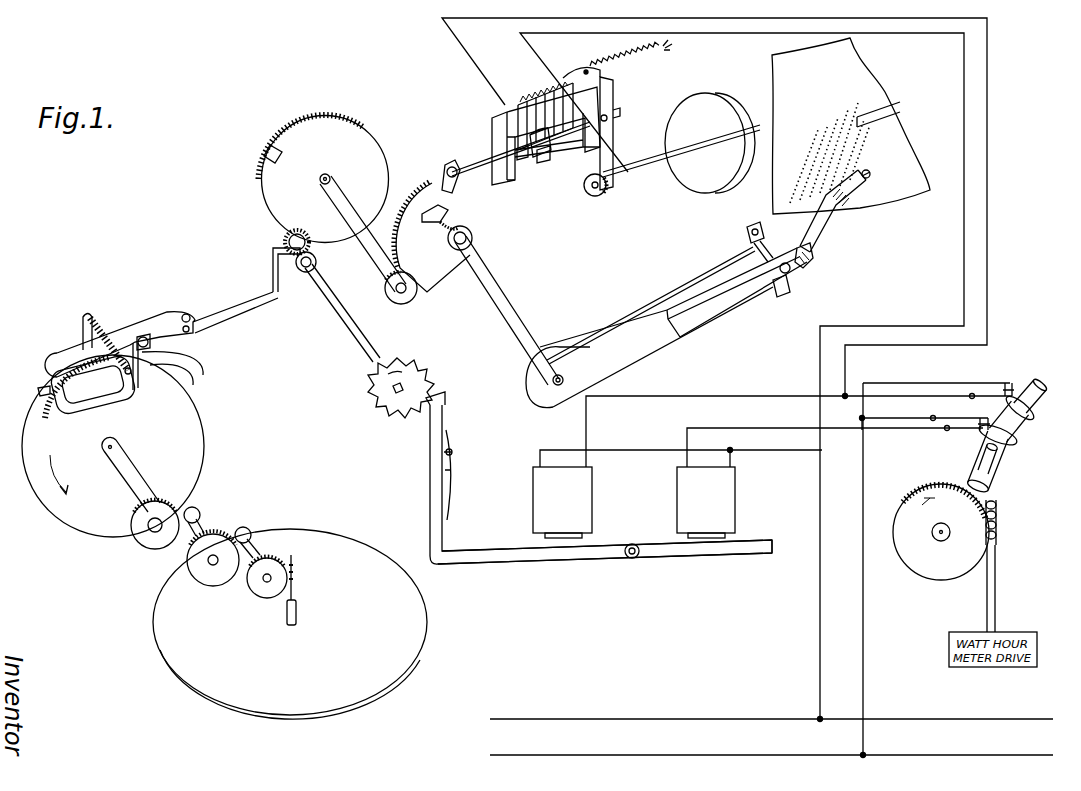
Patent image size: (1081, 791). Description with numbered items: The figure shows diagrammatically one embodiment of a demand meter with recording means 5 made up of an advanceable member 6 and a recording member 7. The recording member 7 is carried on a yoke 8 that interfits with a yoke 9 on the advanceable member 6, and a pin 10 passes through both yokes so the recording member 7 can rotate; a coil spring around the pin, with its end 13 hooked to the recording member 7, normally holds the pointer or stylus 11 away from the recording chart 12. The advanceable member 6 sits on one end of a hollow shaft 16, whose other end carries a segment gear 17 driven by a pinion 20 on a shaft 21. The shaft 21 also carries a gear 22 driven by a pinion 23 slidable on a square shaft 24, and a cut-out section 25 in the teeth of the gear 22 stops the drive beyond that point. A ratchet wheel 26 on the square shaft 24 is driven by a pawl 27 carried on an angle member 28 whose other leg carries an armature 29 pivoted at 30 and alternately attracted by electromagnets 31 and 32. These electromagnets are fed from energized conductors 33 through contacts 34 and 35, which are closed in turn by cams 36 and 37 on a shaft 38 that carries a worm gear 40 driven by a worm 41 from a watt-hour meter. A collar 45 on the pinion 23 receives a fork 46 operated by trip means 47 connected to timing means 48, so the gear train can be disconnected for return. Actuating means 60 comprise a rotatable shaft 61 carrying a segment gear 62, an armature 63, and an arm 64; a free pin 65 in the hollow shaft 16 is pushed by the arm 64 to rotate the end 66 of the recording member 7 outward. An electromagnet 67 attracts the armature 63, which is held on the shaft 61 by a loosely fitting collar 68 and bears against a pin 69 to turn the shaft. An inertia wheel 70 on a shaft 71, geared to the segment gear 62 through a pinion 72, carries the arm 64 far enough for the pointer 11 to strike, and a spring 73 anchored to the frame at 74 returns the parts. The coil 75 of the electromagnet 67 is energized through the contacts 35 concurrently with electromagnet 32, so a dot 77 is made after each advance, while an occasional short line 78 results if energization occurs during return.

The recording means 5 is at (702, 248).
The advanceable member 6 is at (695, 285).
The recording member 7 is at (814, 262).
The yoke 8 is at (791, 290).
The yoke 9 is at (755, 228).
The pin 10 is at (746, 232).
The pointer or stylus 11 is at (870, 173).
The recording chart 12 is at (905, 137).
The end of coil spring 13 is at (826, 242).
The hollow shaft 16 is at (520, 325).
The segment gear 17 is at (432, 280).
The pinion 20 is at (400, 300).
The shaft 21 is at (370, 250).
The gear 22 is at (308, 120).
The pinion 23 is at (282, 242).
The square shaft 24 is at (340, 326).
The cut-out section of teeth 25 is at (270, 145).
The ratchet wheel 26 is at (420, 380).
The pawl 27 is at (445, 400).
The angle member 28 is at (447, 520).
The armature member 29 is at (695, 553).
The pivot mounting 30 is at (632, 558).
The electromagnet 31 is at (736, 495).
The electromagnet 32 is at (592, 503).
The energized conductors 33 is at (985, 722).
The contacts 34 is at (980, 430).
The contacts 35 is at (1013, 388).
The cam 36 is at (1012, 450).
The cam 37 is at (1035, 422).
The shaft 38 is at (990, 480).
The worm gear 40 is at (948, 570).
The worm 41 is at (997, 532).
The collar 45 is at (315, 260).
The fork 46 is at (272, 272).
The trip means 47 is at (215, 412).
The timing means 48 is at (300, 512).
The actuating means 60 is at (575, 129).
The rotatable shaft 61 is at (468, 162).
The segment gear 62 is at (614, 128).
The armature 63 is at (540, 163).
The arm 64 is at (445, 168).
The free pin 65 is at (448, 210).
The end of recording member 66 is at (558, 386).
The electromagnet 67 is at (502, 118).
The loosely fitting collar 68 is at (546, 152).
The pin 69 is at (522, 160).
The inertia wheel 70 is at (722, 96).
The shaft 71 is at (657, 160).
The pinion 72 is at (604, 192).
The spring 73 is at (632, 58).
The meter frame attachment 74 is at (666, 50).
The coil 75 is at (530, 95).
The dot 77 is at (892, 110).
The short line 78 is at (843, 148).